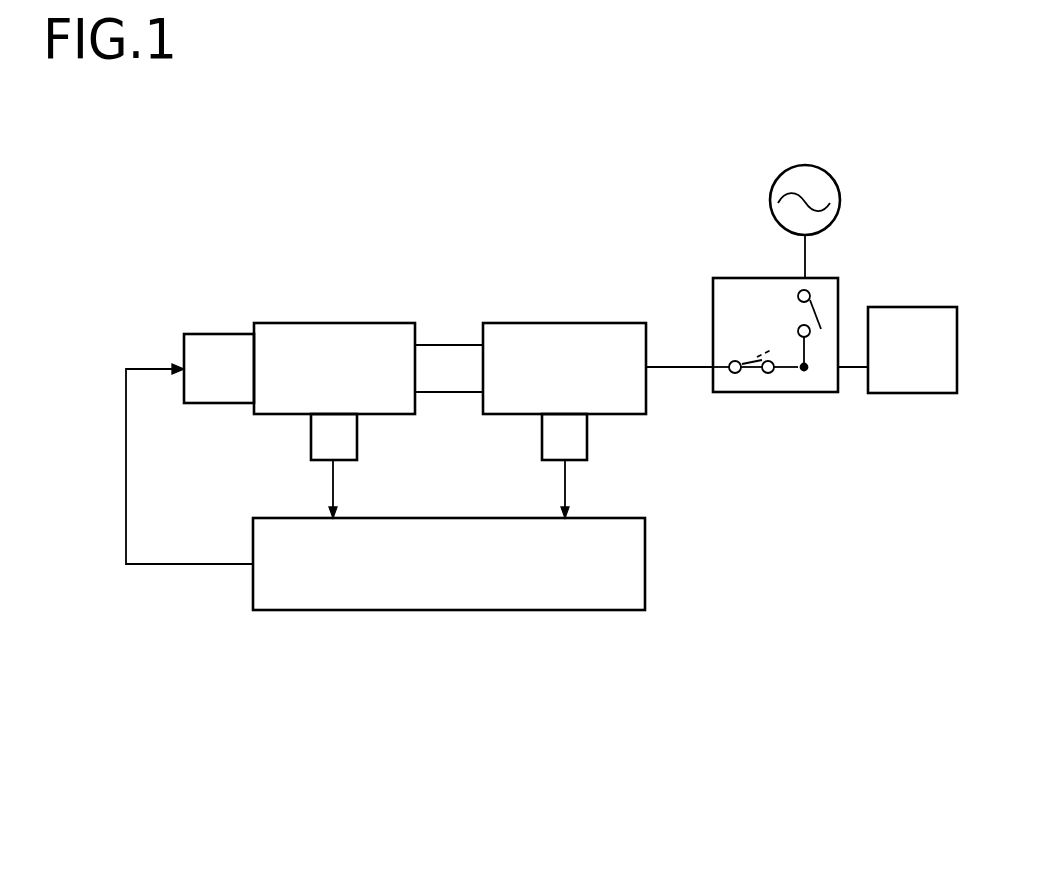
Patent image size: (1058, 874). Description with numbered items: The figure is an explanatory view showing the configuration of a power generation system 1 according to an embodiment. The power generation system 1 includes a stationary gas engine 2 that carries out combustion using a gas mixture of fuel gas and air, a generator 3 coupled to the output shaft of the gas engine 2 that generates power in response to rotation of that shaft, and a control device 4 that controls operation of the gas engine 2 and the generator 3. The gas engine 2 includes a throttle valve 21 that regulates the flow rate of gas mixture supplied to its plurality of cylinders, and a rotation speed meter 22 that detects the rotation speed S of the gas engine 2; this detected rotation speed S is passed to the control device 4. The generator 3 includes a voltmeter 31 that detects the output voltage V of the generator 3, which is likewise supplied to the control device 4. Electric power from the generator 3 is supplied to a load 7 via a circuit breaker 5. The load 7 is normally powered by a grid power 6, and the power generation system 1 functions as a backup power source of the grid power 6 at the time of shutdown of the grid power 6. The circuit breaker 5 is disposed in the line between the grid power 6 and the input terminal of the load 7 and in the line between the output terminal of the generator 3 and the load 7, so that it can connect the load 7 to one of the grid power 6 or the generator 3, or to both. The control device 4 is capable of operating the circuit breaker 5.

The power generation system 1 is at (713, 521).
The gas engine 2 is at (333, 357).
The throttle valve 21 is at (216, 357).
The rotation speed meter 22 is at (333, 437).
The generator 3 is at (561, 357).
The voltmeter 31 is at (567, 437).
The control device 4 is at (441, 574).
The circuit breaker 5 is at (770, 393).
The grid power 6 is at (820, 183).
The load 7 is at (910, 363).